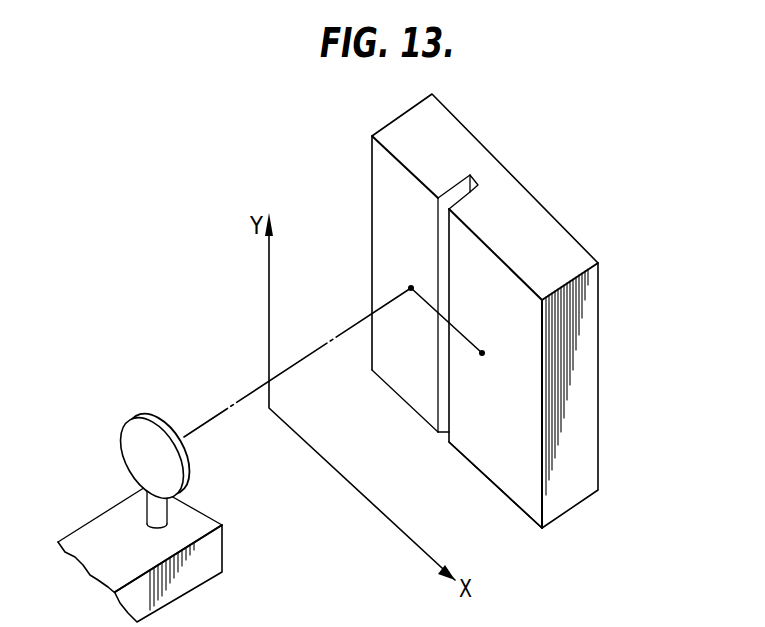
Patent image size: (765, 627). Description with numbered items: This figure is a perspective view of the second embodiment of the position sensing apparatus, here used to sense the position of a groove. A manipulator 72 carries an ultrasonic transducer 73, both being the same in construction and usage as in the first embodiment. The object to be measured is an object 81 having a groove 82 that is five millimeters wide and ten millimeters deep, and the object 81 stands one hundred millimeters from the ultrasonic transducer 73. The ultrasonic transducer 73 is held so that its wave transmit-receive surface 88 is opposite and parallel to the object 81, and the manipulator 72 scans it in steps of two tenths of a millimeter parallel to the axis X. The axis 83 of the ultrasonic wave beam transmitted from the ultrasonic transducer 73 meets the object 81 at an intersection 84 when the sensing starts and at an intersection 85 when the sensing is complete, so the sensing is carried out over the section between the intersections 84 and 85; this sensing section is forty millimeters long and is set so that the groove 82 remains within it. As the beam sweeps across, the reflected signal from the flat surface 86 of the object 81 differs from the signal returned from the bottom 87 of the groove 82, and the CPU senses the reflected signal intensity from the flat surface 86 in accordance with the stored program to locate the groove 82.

The manipulator 72 is at (215, 553).
The ultrasonic transducer 73 is at (135, 442).
The object 81 is at (553, 238).
The groove 82 is at (442, 278).
The axis of the ultrasonic wave beam 83 is at (295, 360).
The intersection at sensing start 84 is at (411, 288).
The intersection at sensing completion 85 is at (482, 353).
The flat surface 86 is at (519, 490).
The bottom of the groove 87 is at (473, 177).
The wave transmit-receive surface 88 is at (188, 458).